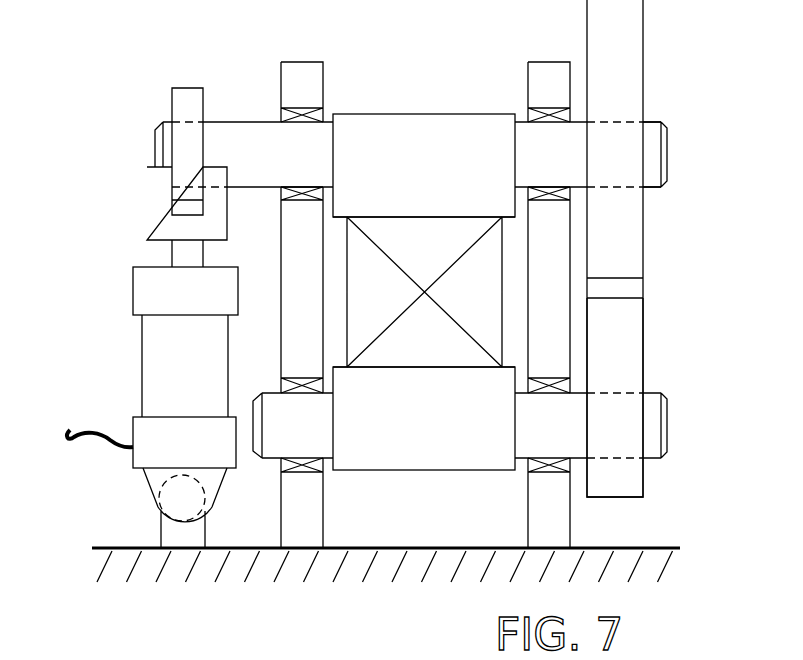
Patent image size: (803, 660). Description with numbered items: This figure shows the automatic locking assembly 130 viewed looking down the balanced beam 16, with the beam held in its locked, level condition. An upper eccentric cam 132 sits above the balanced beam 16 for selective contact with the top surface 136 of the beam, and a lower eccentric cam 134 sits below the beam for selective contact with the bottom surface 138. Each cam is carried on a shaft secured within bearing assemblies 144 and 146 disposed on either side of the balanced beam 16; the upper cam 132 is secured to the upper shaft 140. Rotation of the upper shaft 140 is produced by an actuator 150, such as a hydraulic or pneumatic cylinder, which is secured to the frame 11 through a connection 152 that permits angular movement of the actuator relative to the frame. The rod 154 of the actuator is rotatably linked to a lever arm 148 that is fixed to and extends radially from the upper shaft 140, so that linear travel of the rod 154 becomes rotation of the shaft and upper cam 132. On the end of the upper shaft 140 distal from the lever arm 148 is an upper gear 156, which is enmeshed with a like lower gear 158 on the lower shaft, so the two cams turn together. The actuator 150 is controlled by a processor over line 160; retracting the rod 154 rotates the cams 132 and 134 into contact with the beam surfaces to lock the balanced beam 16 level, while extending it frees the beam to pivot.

The automatic locking assembly 130 is at (226, 54).
The lever arm 148 is at (188, 100).
The rod 154 is at (162, 228).
The actuator 150 is at (157, 372).
The connection 152 is at (146, 514).
The line 160 is at (97, 447).
The bearing assembly 144 is at (303, 78).
The bearing assembly 146 is at (560, 528).
The upper eccentric cam 132 is at (367, 128).
The top surface 136 is at (340, 213).
The balanced beam 16 is at (424, 292).
The lower eccentric cam 134 is at (403, 460).
The bottom surface 138 is at (340, 370).
The upper shaft 140 is at (655, 168).
The upper gear 156 is at (632, 265).
The lower gear 158 is at (672, 325).
The frame 11 is at (548, 565).